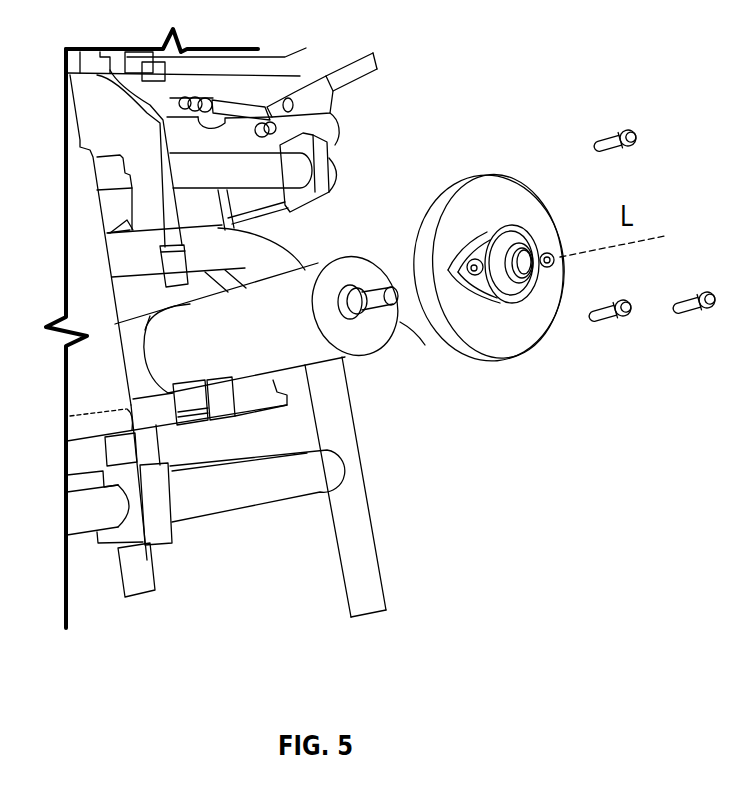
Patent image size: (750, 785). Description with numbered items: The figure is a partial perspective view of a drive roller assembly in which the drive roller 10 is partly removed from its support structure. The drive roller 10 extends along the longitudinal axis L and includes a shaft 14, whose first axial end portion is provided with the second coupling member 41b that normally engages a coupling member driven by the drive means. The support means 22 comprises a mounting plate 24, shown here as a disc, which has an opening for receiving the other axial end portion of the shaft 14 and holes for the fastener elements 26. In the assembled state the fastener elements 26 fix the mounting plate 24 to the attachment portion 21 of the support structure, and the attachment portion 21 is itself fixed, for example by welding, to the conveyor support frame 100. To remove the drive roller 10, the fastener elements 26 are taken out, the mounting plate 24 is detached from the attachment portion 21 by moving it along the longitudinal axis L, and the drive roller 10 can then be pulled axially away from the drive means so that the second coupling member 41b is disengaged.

The drive roller 10 is at (298, 278).
The shaft 14 is at (360, 287).
The attachment portion 21 is at (158, 432).
The support means 22 is at (489, 237).
The mounting plate 24 is at (501, 264).
The fastener elements 26 is at (614, 133).
The second coupling member 41b is at (402, 322).
The conveyor support frame 100 is at (377, 538).